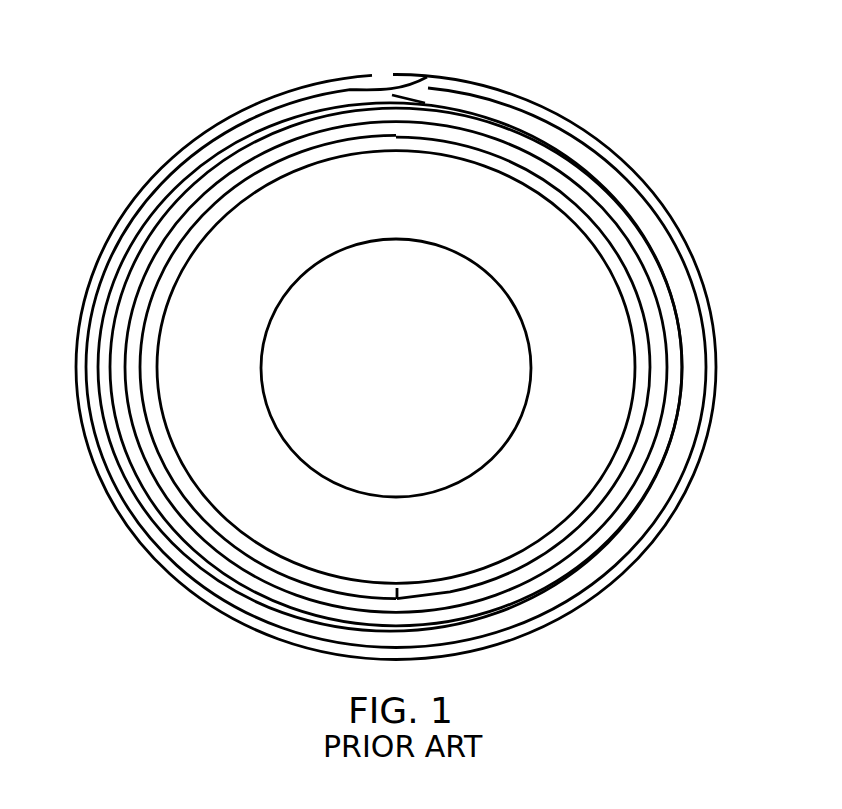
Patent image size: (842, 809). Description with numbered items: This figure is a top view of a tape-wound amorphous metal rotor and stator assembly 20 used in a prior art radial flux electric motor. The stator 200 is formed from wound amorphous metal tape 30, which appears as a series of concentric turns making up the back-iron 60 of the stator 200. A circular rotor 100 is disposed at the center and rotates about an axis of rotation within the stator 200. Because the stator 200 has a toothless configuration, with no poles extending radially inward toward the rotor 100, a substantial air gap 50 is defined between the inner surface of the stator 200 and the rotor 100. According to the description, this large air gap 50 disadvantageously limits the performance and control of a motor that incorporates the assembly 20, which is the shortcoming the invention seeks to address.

The rotor and stator assembly 20 is at (87, 58).
The wound amorphous metal tape 30 is at (640, 515).
The air gap 50 is at (295, 516).
The back-iron 60 is at (705, 447).
The rotor 100 is at (264, 411).
The stator 200 is at (657, 192).